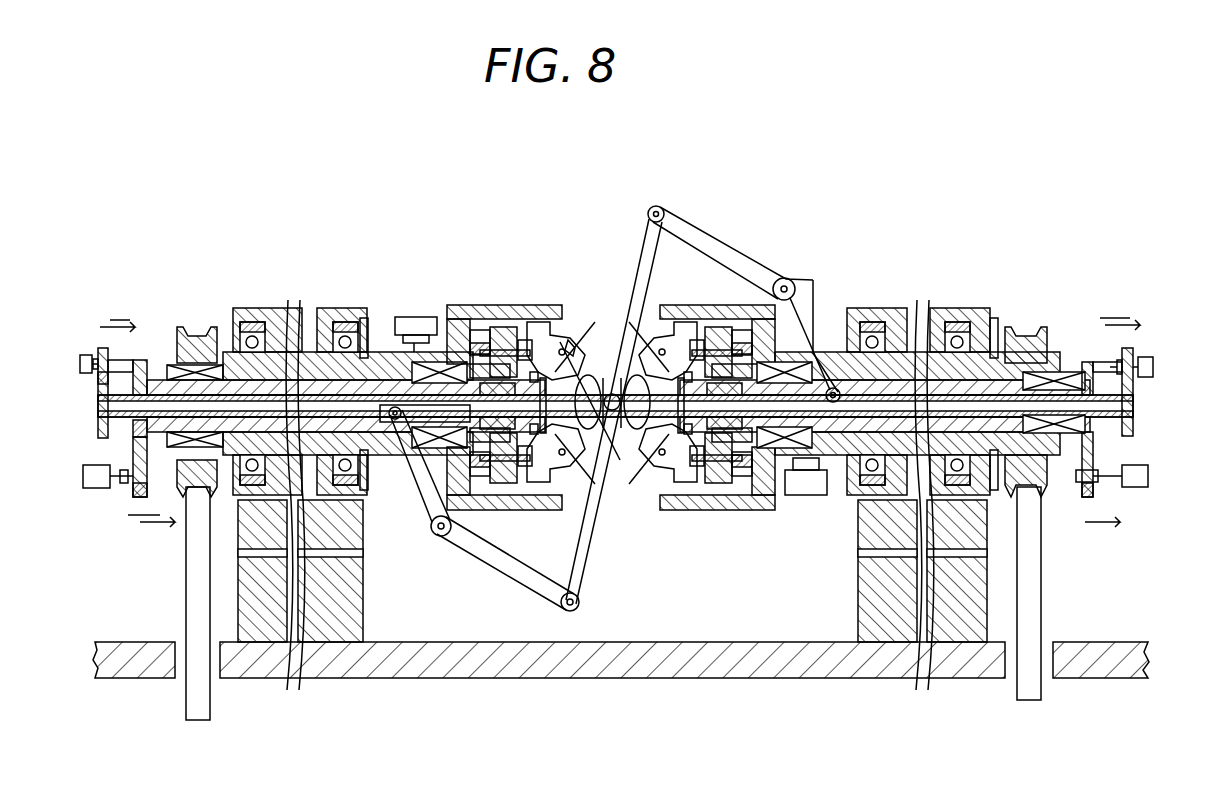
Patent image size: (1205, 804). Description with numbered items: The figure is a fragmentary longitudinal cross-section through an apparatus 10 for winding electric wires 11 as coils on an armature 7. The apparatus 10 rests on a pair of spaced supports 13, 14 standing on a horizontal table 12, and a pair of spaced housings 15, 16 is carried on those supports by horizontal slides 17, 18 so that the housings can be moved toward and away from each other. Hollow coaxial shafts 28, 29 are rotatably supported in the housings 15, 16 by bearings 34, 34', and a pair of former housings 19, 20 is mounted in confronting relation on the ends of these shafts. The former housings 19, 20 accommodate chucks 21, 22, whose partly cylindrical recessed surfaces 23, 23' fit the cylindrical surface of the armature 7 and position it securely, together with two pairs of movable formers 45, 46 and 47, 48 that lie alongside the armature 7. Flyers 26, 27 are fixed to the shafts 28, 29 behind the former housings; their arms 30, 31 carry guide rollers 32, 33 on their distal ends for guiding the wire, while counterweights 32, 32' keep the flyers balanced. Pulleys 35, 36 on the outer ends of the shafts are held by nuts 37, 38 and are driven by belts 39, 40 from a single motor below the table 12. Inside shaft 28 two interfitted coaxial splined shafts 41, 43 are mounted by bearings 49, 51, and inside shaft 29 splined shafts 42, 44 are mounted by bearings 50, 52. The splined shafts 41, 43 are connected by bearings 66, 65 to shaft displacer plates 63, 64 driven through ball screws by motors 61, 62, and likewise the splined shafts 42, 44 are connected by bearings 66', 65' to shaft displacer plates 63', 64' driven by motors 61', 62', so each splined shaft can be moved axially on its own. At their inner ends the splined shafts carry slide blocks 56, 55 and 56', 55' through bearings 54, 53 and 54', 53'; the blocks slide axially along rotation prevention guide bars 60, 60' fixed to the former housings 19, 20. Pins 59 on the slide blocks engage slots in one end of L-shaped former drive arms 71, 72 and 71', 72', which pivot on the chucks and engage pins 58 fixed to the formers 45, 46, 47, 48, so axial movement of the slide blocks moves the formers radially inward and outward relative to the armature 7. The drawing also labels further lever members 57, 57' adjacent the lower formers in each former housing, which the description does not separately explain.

The armature 7 is at (612, 410).
The apparatus 10 is at (616, 212).
The electric wires 11 is at (638, 240).
The horizontal table 12 is at (397, 668).
The support 13 is at (320, 668).
The support 14 is at (852, 665).
The housing 15 is at (284, 308).
The housing 16 is at (930, 308).
The horizontal slide 17 is at (355, 575).
The horizontal slide 18 is at (975, 565).
The former housing 19 is at (452, 308).
The former housing 20 is at (760, 495).
The chuck 21 is at (590, 417).
The chuck 22 is at (614, 440).
The recessed surface 23 is at (574, 402).
The recessed surface 23' is at (651, 402).
The flyer 26 is at (436, 545).
The flyer 27 is at (780, 278).
The hollow coaxial shaft 28 is at (386, 350).
The hollow coaxial shaft 29 is at (836, 455).
The arm 30 is at (478, 568).
The arm 31 is at (712, 240).
The guide roller 32 is at (487, 455).
The counterweight 32' is at (808, 511).
The guide roller 33 is at (660, 207).
The bearing 34 is at (300, 373).
The bearing 34' is at (922, 381).
The pulley 35 is at (170, 330).
The pulley 36 is at (1034, 350).
The nut 37 is at (118, 358).
The nut 38 is at (1040, 345).
The belt 39 is at (186, 602).
The belt 40 is at (1042, 555).
The splined shaft 41 is at (295, 310).
The splined shaft 42 is at (884, 518).
The splined shaft 43 is at (364, 320).
The splined shaft 44 is at (952, 518).
The movable former 45 is at (588, 296).
The movable former 46 is at (548, 484).
The movable former 47 is at (606, 378).
The movable former 48 is at (676, 484).
The bearing 49 is at (196, 340).
The bearing 50 is at (996, 335).
The bearing 51 is at (150, 360).
The bearing 52 is at (1065, 372).
The bearing 53 is at (509, 351).
The bearing 53' is at (721, 369).
The bearing 54 is at (490, 451).
The bearing 54' is at (727, 466).
The slide block 55 is at (529, 348).
The slide block 55' is at (700, 350).
The slide block 56 is at (503, 484).
The slide block 56' is at (733, 483).
The clutch lever 57 is at (557, 376).
The clutch lever 57' is at (671, 480).
The pin 58 is at (590, 338).
The pin 59 is at (565, 322).
The rotation prevention guide bar 60 is at (498, 381).
The rotation prevention guide bar 60' is at (700, 363).
The motor 61 is at (85, 492).
The motor 61' is at (1138, 481).
The motor 62 is at (74, 341).
The motor 62' is at (1155, 346).
The shaft displacer plate 63 is at (115, 510).
The shaft displacer plate 63' is at (1119, 499).
The shaft displacer plate 64 is at (74, 388).
The shaft displacer plate 64' is at (1117, 316).
The bearing 65 is at (92, 450).
The bearing 65' is at (1134, 429).
The bearing 66 is at (74, 398).
The bearing 66' is at (1158, 392).
The L-shaped former drive arm 71 is at (425, 455).
The L-shaped former drive arm 71' is at (668, 329).
The L-shaped former drive arm 72 is at (557, 445).
The L-shaped former drive arm 72' is at (647, 437).